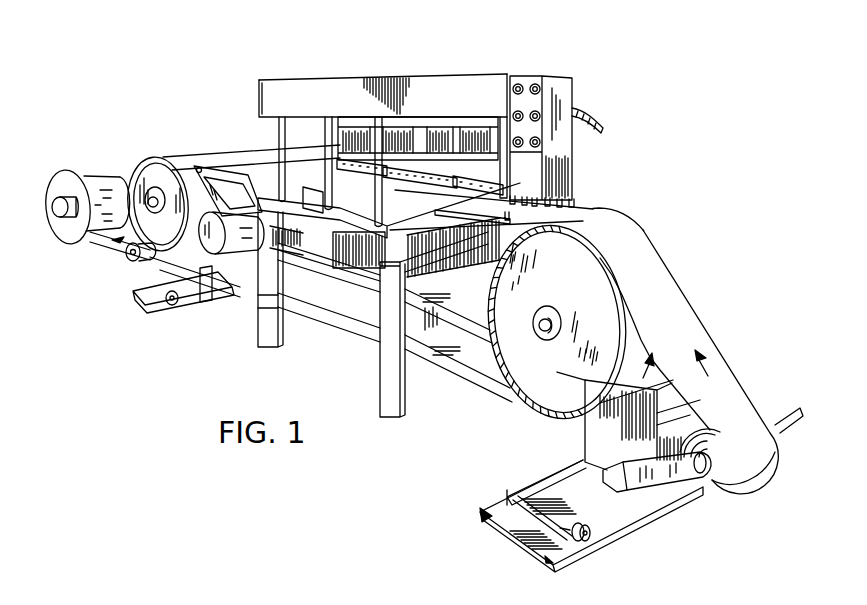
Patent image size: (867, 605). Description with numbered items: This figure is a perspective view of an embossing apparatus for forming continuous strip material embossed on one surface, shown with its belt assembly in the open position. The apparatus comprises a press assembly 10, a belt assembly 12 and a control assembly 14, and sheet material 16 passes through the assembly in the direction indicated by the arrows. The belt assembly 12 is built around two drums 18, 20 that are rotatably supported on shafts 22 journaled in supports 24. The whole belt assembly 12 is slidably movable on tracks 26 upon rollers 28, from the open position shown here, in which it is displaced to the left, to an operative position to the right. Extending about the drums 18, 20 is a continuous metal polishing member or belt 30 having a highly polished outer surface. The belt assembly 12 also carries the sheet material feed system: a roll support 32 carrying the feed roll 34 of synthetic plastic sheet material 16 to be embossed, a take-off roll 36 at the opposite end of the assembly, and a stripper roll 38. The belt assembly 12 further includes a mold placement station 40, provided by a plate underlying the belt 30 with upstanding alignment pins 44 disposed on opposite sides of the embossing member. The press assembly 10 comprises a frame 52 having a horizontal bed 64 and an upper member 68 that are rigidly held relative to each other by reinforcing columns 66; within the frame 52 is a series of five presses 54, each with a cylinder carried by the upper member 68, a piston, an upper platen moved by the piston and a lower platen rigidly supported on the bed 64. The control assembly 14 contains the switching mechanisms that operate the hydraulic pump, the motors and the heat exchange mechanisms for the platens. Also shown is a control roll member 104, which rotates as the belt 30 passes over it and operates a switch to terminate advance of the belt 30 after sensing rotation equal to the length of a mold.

The press assembly 10 is at (373, 72).
The belt assembly 12 is at (581, 437).
The control assembly 14 is at (523, 73).
The sheet material 16 is at (713, 328).
The drum 18 is at (550, 390).
The drum 20 is at (163, 166).
The shaft 22 is at (151, 196).
The support 24 is at (224, 280).
The track 26 is at (170, 308).
The roller 28 is at (588, 530).
The belt 30 is at (488, 383).
The roll support 32 is at (678, 483).
The feed roll 34 is at (710, 487).
The take-off roll 36 is at (60, 228).
The stripper roll 38 is at (128, 260).
The mold placement station 40 is at (481, 223).
The alignment pin 44 is at (582, 209).
The frame 52 is at (291, 78).
The press 54 is at (426, 141).
The horizontal bed 64 is at (300, 258).
The reinforcing column 66 is at (328, 147).
The upper member 68 is at (340, 92).
The control roll member 104 is at (230, 165).